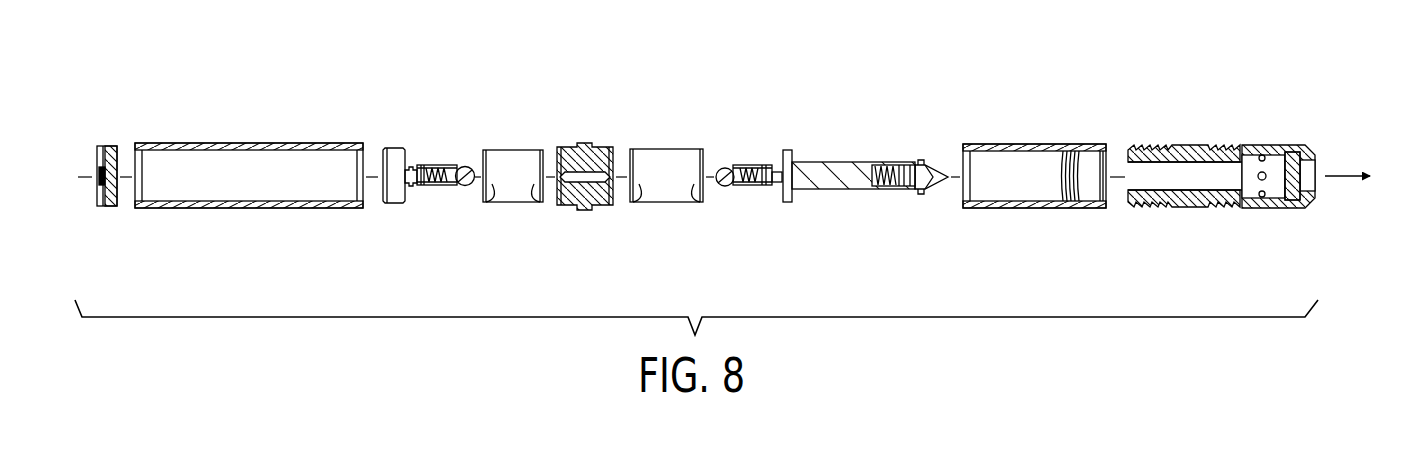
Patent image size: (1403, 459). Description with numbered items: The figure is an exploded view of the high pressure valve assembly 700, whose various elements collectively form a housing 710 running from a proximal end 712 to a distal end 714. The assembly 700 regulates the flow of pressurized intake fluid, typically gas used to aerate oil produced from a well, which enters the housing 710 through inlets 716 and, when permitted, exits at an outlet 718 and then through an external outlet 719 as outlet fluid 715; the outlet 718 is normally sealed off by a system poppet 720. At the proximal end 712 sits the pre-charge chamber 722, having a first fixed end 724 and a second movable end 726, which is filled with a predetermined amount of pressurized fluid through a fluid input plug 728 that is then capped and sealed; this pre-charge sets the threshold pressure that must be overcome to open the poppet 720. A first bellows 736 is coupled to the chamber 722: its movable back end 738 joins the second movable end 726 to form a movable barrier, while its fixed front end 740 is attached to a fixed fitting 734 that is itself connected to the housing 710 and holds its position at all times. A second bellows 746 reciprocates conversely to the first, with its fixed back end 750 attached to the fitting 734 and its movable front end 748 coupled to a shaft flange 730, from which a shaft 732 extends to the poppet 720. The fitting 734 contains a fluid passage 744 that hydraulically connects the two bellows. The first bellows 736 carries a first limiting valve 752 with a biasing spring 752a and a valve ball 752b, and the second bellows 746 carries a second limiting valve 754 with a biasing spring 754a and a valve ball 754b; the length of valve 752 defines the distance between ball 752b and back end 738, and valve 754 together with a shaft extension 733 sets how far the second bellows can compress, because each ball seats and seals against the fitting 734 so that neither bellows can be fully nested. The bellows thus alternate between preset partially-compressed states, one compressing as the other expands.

The high pressure valve assembly 700 is at (249, 169).
The housing 710 is at (688, 169).
The proximal end 712 is at (102, 189).
The distal end 714 is at (1278, 179).
The outlet fluid 715 is at (1345, 175).
The inlets 716 is at (1261, 197).
The outlet 718 is at (1292, 196).
The external outlet 719 is at (1306, 172).
The system poppet 720 is at (945, 175).
The pre-charge chamber 722 is at (249, 200).
The first fixed end 724 is at (140, 188).
The second movable end 726 is at (383, 200).
The fluid input plug 728 is at (102, 170).
The shaft flange 730 is at (856, 186).
The shaft 732 is at (852, 177).
The shaft extension 733 is at (784, 176).
The fixed fitting 734 is at (582, 192).
The first bellows 736 is at (512, 195).
The movable back end 738 is at (487, 195).
The fixed front end 740 is at (539, 195).
The fluid passage 744 is at (584, 181).
The second bellows 746 is at (658, 190).
The movable front end 748 is at (697, 195).
The fixed back end 750 is at (636, 195).
The first limiting valve 752 is at (441, 200).
The biasing spring 752a is at (440, 186).
The valve ball 752b is at (462, 186).
The second limiting valve 754 is at (718, 114).
The biasing spring 754a is at (755, 168).
The valve ball 754b is at (720, 169).